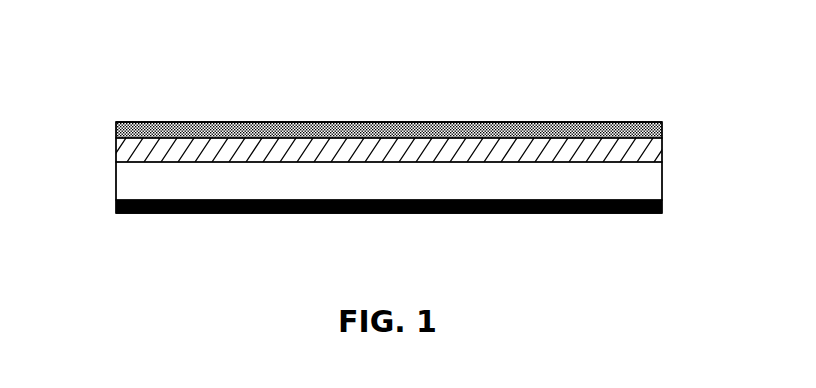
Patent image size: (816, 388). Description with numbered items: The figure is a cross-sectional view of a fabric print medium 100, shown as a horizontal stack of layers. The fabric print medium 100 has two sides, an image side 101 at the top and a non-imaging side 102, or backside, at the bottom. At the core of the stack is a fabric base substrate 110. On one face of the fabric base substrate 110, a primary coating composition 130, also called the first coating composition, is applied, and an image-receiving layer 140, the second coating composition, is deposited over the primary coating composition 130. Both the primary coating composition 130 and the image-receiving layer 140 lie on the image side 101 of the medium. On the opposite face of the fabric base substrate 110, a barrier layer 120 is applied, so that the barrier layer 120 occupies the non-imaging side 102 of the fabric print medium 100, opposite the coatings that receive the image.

The fabric print medium 100 is at (498, 90).
The image side 101 is at (229, 91).
The non-imaging side 102 is at (223, 240).
The fabric base substrate 110 is at (662, 195).
The barrier layer 120 is at (116, 214).
The primary coating composition 130 is at (116, 152).
The image-receiving layer 140 is at (662, 133).